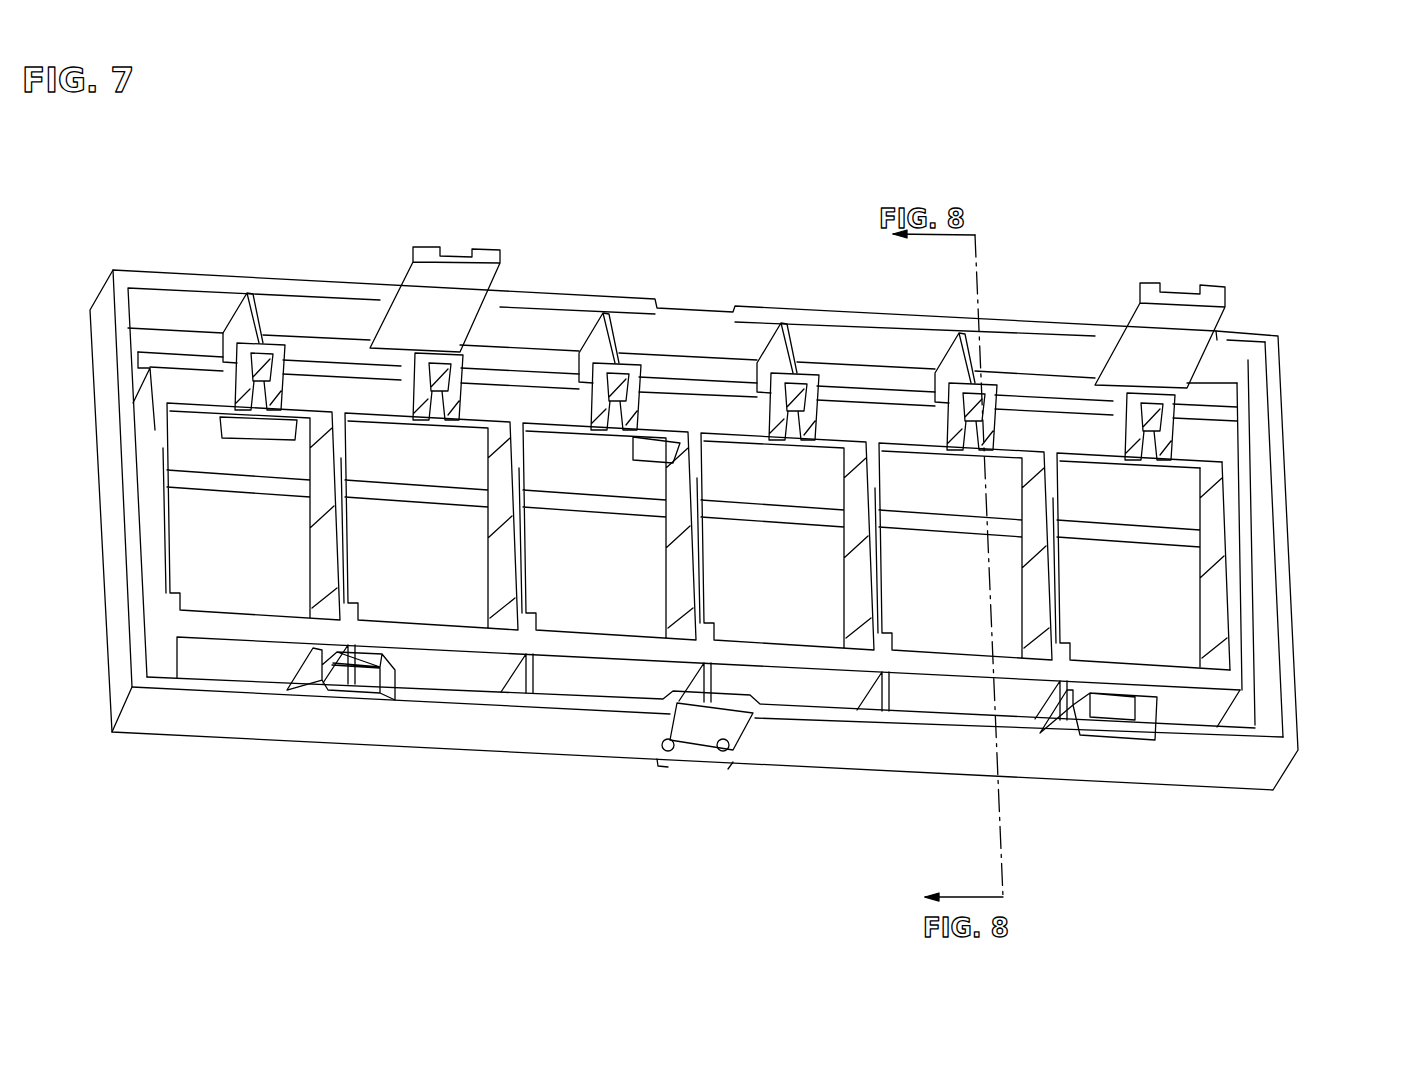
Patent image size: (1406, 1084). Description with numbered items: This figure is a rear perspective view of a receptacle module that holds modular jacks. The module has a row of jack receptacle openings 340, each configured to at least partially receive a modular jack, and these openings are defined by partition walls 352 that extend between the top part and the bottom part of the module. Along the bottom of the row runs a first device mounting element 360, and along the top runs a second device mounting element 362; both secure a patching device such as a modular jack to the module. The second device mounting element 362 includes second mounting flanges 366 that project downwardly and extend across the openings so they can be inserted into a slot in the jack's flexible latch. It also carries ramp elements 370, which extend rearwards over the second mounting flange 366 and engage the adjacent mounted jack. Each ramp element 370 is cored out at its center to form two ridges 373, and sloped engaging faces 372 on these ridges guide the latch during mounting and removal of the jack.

The jack receptacle opening 340 is at (700, 514).
The partition wall 352 is at (341, 574).
The first device mounting element 360 is at (1178, 675).
The second device mounting element 362 is at (1063, 455).
The second mounting flange 366 is at (1063, 458).
The ramp element 370 is at (772, 410).
The sloped engaging face 372 is at (1135, 430).
The ridge 373 is at (767, 410).